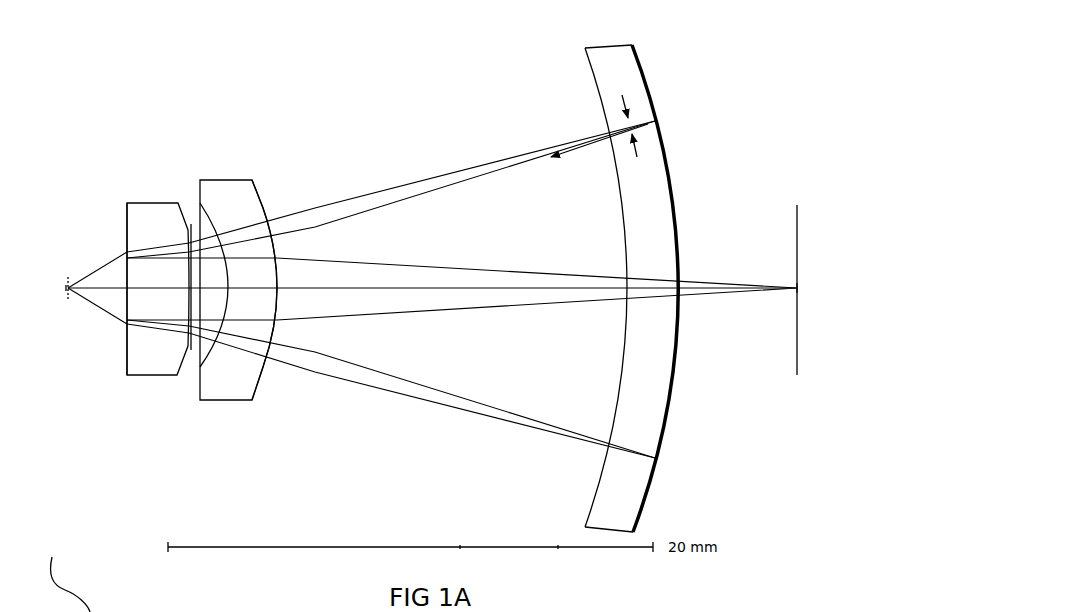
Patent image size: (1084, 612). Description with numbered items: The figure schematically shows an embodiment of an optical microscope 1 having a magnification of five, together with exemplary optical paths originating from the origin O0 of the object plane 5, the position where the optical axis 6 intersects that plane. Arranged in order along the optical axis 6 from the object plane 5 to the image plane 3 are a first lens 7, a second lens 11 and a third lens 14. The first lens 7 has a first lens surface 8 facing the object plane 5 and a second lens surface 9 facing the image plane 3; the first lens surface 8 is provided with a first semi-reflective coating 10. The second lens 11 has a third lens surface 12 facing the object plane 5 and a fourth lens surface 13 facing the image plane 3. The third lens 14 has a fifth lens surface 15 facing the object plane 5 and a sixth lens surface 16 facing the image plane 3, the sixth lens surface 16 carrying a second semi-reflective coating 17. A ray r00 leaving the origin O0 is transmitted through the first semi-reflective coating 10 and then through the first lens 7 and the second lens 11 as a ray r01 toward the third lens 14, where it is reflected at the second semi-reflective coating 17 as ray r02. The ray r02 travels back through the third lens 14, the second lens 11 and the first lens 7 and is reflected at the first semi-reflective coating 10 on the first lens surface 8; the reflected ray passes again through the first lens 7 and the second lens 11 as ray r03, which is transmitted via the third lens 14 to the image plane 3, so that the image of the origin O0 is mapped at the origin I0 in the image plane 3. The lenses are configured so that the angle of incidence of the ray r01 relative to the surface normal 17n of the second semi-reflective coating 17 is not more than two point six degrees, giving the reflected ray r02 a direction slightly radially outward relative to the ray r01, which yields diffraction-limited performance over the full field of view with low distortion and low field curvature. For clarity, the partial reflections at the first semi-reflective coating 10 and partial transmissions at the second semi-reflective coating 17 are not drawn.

The optical microscope 1 is at (108, 453).
The image plane 3 is at (797, 309).
The object plane 5 is at (66, 288).
The optical axis 6 is at (357, 283).
The first lens 7 is at (158, 378).
The first lens surface 8 is at (127, 333).
The second lens surface 9 is at (188, 224).
The first semi-reflective coating 10 is at (126, 237).
The second lens 11 is at (231, 405).
The third lens surface 12 is at (212, 348).
The fourth lens surface 13 is at (265, 202).
The third lens 14 is at (646, 270).
The fifth lens surface 15 is at (626, 314).
The sixth lens surface 16 is at (673, 382).
The second semi-reflective coating 17 is at (674, 185).
The surface normal 17n is at (584, 156).
The ray r00 is at (106, 277).
The ray r01 is at (424, 190).
The ray r02 is at (311, 206).
The ray r03 is at (349, 256).
The origin of the object plane O0 is at (50, 320).
The origin of the image plane I0 is at (800, 289).